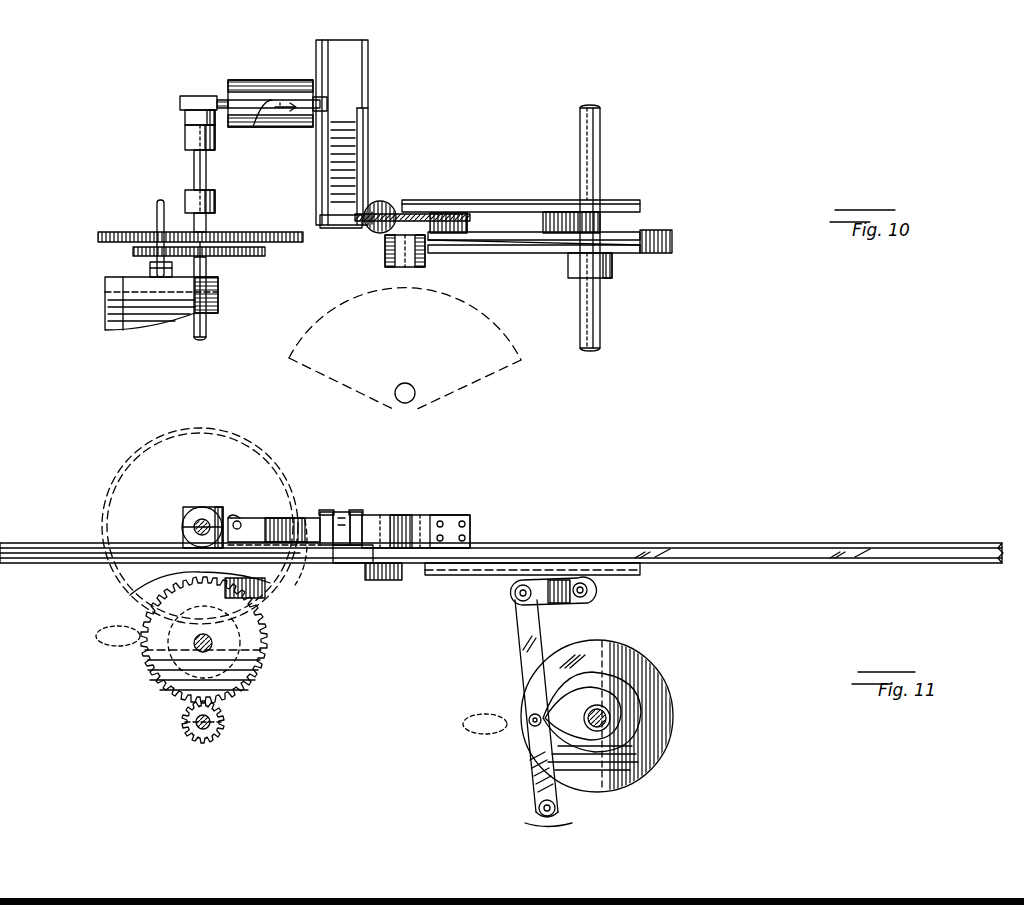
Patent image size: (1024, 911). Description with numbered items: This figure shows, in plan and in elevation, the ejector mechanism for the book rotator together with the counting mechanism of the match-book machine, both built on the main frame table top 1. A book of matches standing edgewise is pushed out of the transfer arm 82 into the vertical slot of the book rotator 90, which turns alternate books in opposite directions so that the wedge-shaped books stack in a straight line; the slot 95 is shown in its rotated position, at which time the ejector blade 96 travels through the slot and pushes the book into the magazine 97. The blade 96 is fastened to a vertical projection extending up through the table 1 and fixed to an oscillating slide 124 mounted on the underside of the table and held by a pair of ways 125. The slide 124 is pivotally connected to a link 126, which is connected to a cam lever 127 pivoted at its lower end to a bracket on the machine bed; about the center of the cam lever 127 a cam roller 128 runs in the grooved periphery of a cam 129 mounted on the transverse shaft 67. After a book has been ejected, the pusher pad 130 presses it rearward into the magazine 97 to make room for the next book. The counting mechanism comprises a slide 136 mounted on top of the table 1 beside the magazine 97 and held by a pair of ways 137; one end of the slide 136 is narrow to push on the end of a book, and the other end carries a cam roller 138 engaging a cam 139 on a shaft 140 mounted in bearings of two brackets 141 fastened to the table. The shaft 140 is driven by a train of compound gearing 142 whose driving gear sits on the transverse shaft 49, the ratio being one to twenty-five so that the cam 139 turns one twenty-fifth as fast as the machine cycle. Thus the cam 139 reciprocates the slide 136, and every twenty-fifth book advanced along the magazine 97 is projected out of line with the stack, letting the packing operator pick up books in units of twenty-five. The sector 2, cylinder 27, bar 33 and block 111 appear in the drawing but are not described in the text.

In FIG. 11, the main frame table top 1 is at (708, 543).
In FIG. 10, the sector 2 is at (505, 313).
In FIG. 10, the cylinder 27 is at (105, 308).
In FIG. 10, the bar 33 is at (157, 209).
In FIG. 11, the transverse shaft 49 is at (182, 722).
In FIG. 10, the transverse shaft 67 is at (600, 328).
In FIG. 11, the transverse shaft 67 is at (606, 712).
In FIG. 10, the transfer arm 82 is at (385, 260).
In FIG. 10, the book rotator 90 is at (386, 205).
In FIG. 11, the book rotator 90 is at (405, 520).
In FIG. 10, the slot 95 is at (373, 210).
In FIG. 10, the ejector blade 96 is at (355, 216).
In FIG. 11, the ejector blade 96 is at (455, 515).
In FIG. 10, the magazine 97 is at (332, 158).
In FIG. 11, the magazine 97 is at (355, 563).
In FIG. 11, the block 111 is at (368, 580).
In FIG. 10, the oscillating slide 124 is at (473, 200).
In FIG. 11, the oscillating slide 124 is at (470, 548).
In FIG. 10, the ways 125 is at (518, 200).
In FIG. 11, the link 126 is at (560, 603).
In FIG. 11, the cam lever 127 is at (515, 657).
In FIG. 11, the cam roller 128 is at (528, 722).
In FIG. 10, the cam 129 is at (672, 245).
In FIG. 11, the cam 129 is at (625, 688).
In FIG. 10, the pusher pad 130 is at (342, 228).
In FIG. 10, the slide 136 is at (380, 100).
In FIG. 11, the slide 136 is at (322, 512).
In FIG. 10, the ways 137 is at (280, 80).
In FIG. 11, the ways 137 is at (290, 562).
In FIG. 10, the cam roller 138 is at (276, 108).
In FIG. 11, the cam roller 138 is at (236, 518).
In FIG. 10, the cam 139 is at (210, 98).
In FIG. 11, the cam 139 is at (232, 503).
In FIG. 10, the shaft 140 is at (207, 181).
In FIG. 11, the shaft 140 is at (185, 522).
In FIG. 10, the brackets 141 is at (185, 139).
In FIG. 10, the compound gearing 142 is at (262, 232).
In FIG. 11, the compound gearing 142 is at (175, 640).